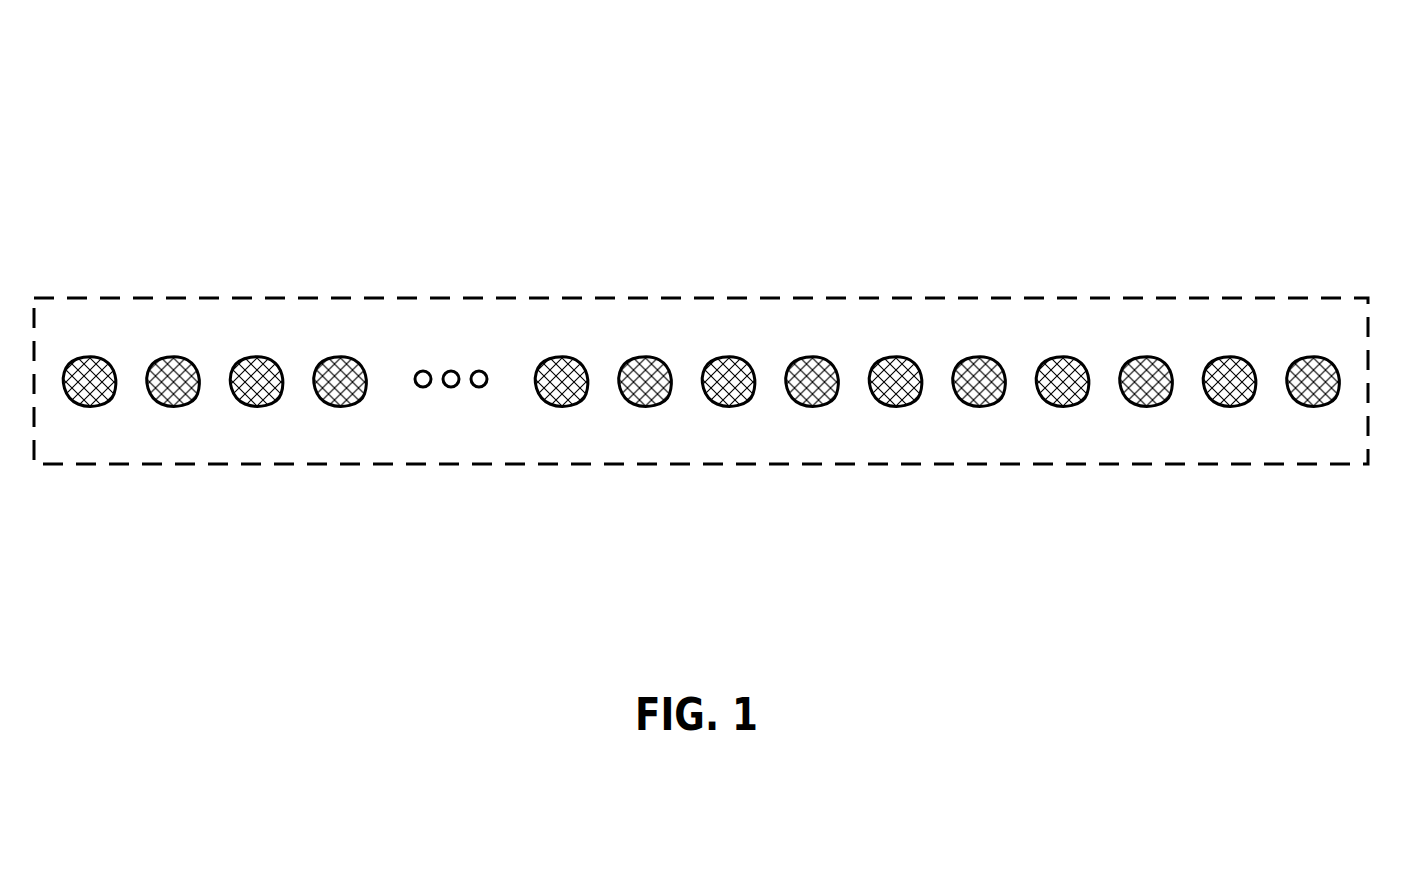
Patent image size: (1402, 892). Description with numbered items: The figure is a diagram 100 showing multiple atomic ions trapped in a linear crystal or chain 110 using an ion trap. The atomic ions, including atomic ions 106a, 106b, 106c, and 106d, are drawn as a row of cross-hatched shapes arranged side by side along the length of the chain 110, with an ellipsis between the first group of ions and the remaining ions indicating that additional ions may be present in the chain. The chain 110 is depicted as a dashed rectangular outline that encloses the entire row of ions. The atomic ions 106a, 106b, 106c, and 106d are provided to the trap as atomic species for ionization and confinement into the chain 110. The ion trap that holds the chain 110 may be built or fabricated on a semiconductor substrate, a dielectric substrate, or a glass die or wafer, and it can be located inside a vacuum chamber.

The diagram 100 is at (202, 62).
The linear crystal or chain 110 is at (759, 297).
The atomic ion 106a is at (115, 365).
The atomic ion 106b is at (195, 365).
The atomic ion 106c is at (1250, 362).
The atomic ion 106d is at (1332, 362).